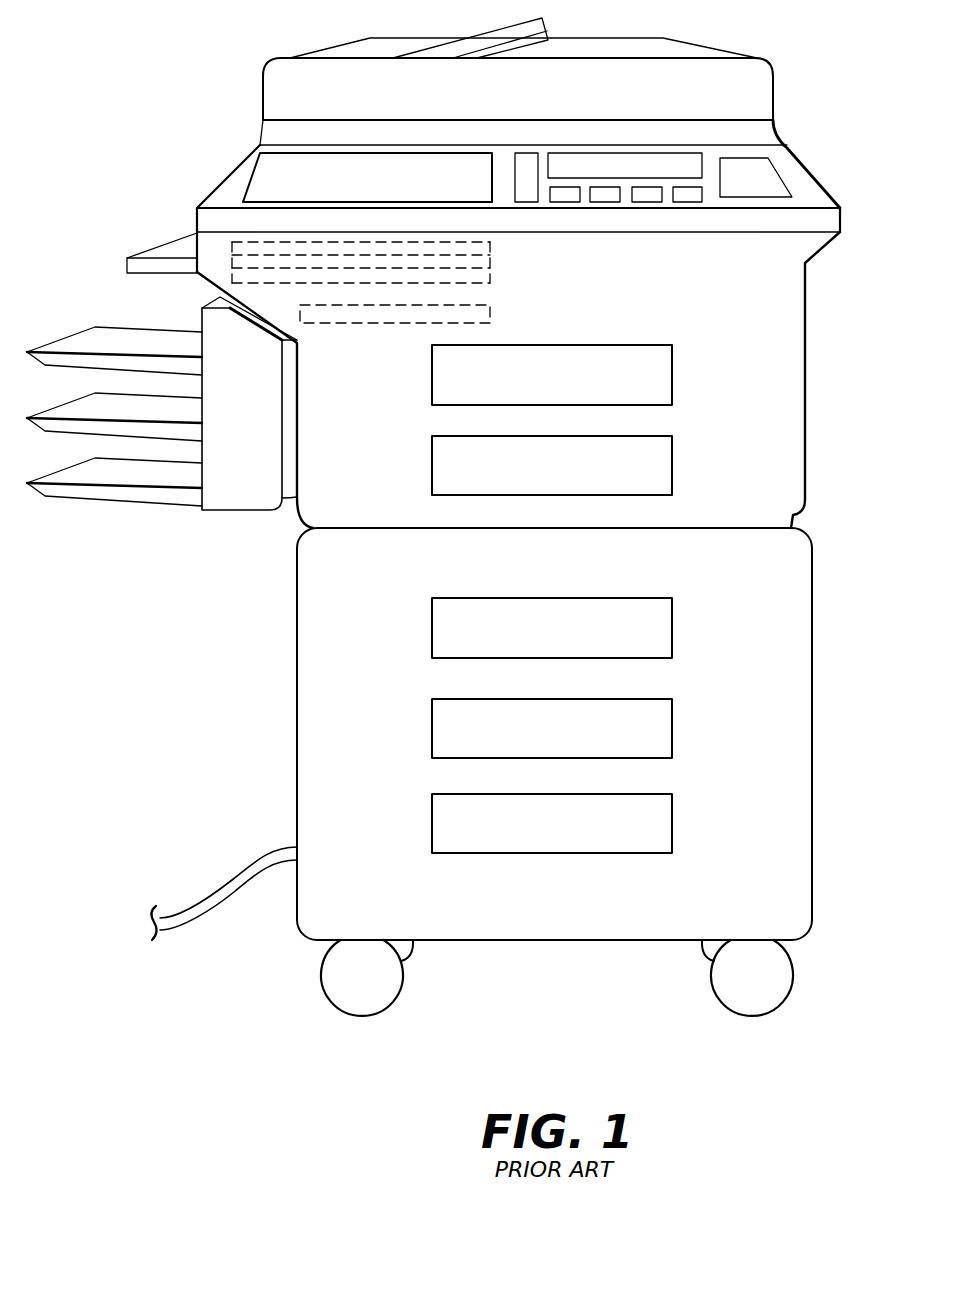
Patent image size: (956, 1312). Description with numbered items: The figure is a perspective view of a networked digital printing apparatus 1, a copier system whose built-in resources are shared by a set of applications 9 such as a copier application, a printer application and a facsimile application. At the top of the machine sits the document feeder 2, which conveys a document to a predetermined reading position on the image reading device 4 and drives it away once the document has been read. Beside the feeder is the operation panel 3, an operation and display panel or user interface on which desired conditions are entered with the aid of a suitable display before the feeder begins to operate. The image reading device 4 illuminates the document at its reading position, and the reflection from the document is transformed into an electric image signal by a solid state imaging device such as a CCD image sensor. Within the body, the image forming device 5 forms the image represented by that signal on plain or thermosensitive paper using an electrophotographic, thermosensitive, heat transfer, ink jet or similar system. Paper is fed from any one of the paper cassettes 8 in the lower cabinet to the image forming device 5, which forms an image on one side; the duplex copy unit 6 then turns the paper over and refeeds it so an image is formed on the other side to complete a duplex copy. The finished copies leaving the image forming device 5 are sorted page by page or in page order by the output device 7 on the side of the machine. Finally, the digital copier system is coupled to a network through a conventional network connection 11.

The digital printing apparatus 1 is at (172, 655).
The document feeder 2 is at (758, 77).
The operation panel 3 is at (276, 157).
The image reading device 4 is at (224, 160).
The image forming device 5 is at (672, 355).
The duplex copy unit 6 is at (672, 465).
The output device 7 is at (130, 507).
The paper cassettes 8 is at (672, 620).
The applications 9 is at (520, 278).
The network connection 11 is at (220, 880).